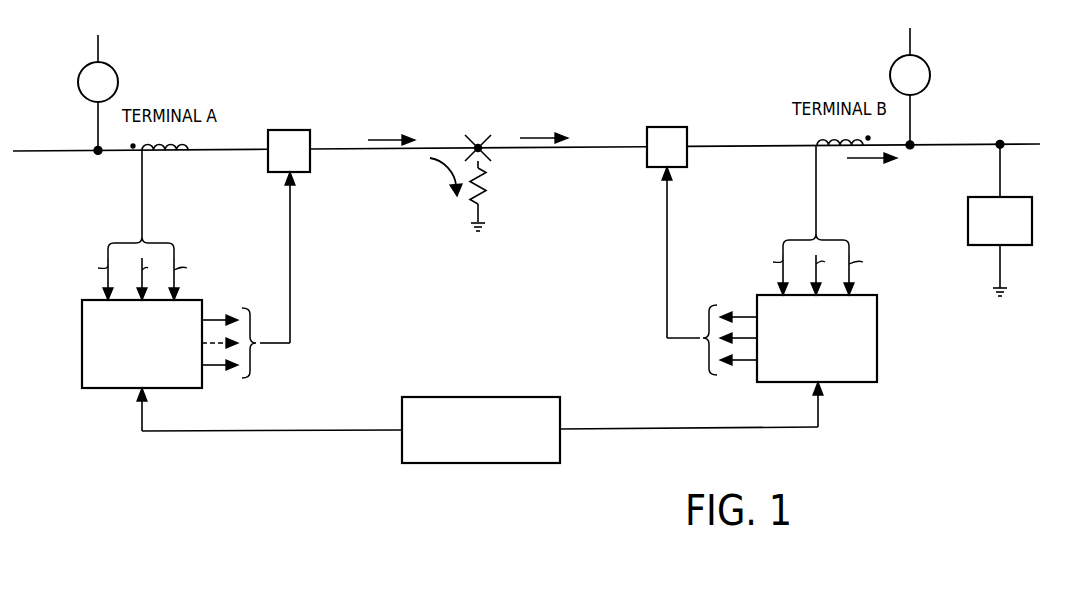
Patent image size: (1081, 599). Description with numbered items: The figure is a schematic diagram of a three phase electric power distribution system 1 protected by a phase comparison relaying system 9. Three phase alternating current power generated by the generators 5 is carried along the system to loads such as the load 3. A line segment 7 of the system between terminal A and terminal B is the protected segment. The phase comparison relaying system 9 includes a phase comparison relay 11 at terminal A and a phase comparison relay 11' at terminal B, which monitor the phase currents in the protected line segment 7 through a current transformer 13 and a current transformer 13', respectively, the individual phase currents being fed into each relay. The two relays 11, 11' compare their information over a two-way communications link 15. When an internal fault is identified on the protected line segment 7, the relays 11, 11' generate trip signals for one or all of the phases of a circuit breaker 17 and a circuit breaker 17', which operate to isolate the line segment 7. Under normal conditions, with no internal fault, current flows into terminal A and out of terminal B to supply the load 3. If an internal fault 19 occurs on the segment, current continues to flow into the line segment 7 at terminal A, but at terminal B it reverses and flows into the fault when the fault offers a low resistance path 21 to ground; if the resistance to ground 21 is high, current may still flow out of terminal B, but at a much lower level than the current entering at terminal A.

The three phase electric power distribution system 1 is at (78, 151).
The load 3 is at (1032, 228).
The generator 5 is at (117, 77).
The line segment 7 is at (447, 147).
The phase comparison relaying system 9 is at (492, 308).
The phase comparison relay 11 is at (169, 280).
The phase comparison relay 11' is at (794, 274).
The current transformer 13 is at (180, 181).
The current transformer 13' is at (835, 177).
The two-way communications link 15 is at (433, 397).
The circuit breaker 17 is at (289, 135).
The circuit breaker 17' is at (668, 131).
The internal fault 19 is at (480, 143).
The resistance to ground 21 is at (486, 180).